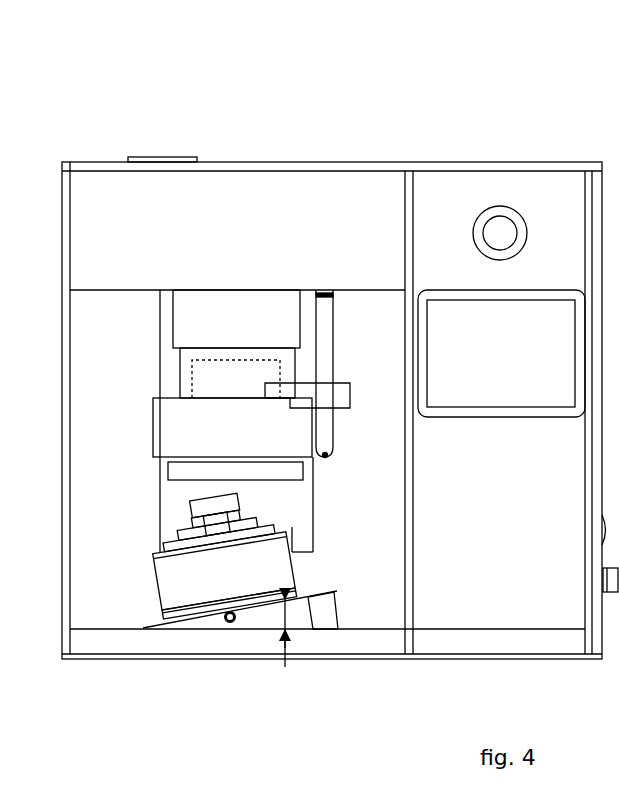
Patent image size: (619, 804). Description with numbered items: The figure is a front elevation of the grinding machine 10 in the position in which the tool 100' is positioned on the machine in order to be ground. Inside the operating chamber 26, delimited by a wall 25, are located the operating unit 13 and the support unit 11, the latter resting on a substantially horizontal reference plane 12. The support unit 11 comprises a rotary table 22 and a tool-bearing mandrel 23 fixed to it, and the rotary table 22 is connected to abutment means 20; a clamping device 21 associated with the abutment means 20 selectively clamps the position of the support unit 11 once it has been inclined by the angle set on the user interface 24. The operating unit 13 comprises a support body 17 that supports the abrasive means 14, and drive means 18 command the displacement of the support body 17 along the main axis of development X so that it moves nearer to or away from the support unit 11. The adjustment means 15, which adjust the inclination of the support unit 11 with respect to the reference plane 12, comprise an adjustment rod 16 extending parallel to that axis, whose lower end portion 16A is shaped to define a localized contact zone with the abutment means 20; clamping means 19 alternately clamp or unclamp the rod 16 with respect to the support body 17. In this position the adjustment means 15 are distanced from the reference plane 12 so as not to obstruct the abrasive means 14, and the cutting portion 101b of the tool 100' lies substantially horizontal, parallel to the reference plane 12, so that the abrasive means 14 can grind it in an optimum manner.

The grinding machine 10 is at (139, 118).
The support unit 11 is at (105, 578).
The reference plane 12 is at (358, 630).
The operating unit 13 is at (125, 418).
The abrasive means 14 is at (287, 474).
The adjustment means 15 is at (347, 347).
The adjustment rod 16 is at (325, 310).
The lower end portion 16A is at (325, 455).
The support body 17 is at (173, 432).
The drive means 18 is at (203, 378).
The clamping means 19 is at (325, 396).
The abutment means 20 is at (325, 621).
The clamping device 21 is at (230, 621).
The rotary table 22 is at (225, 575).
The tool-bearing mandrel 23 is at (183, 537).
The user interface 24 is at (501, 353).
The wall 25 is at (407, 446).
The operating chamber 26 is at (403, 567).
The tool 100' is at (93, 447).
The cutting portion 101b is at (222, 494).